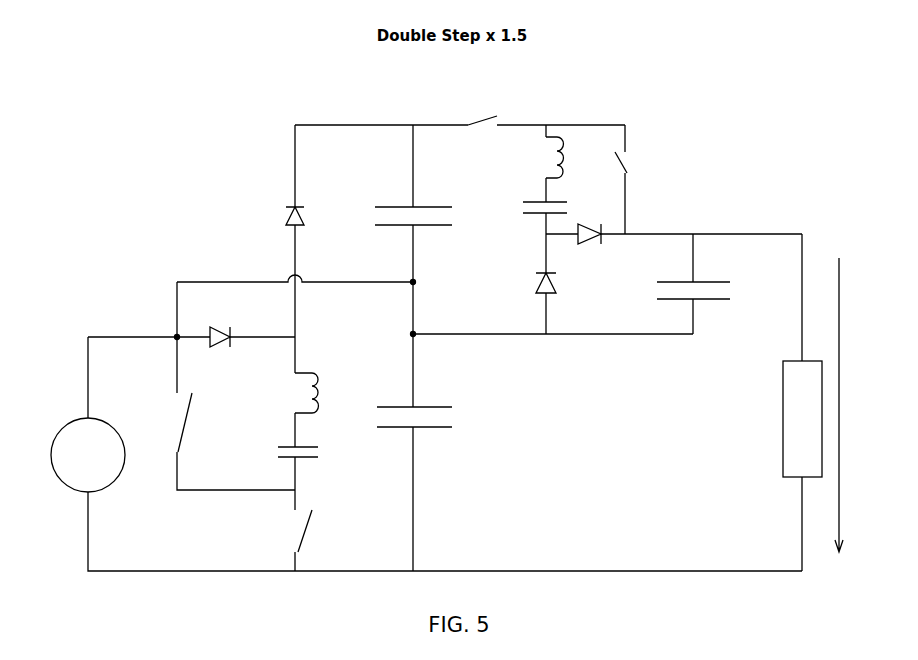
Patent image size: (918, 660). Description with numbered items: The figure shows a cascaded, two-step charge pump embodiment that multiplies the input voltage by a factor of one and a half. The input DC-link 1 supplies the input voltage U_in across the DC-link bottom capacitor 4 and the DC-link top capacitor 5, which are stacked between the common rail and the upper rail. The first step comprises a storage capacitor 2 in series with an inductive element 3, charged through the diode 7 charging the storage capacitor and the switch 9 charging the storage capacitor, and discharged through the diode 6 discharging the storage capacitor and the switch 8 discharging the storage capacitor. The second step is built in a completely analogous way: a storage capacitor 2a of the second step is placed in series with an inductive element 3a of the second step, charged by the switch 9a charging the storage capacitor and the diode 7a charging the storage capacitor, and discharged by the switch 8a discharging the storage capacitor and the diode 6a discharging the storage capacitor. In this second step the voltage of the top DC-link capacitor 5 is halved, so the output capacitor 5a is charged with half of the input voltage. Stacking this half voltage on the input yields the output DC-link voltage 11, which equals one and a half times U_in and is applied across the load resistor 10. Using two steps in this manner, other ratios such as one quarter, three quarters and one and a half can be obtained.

The input DC-link 1 is at (76, 455).
The storage capacitor 2 is at (291, 461).
The inductive element 3 is at (300, 393).
The DC-link bottom capacitor 4 is at (414, 427).
The DC-link top capacitor 5 is at (413, 223).
The diode discharging the storage capacitor 6 is at (286, 216).
The diode charging the storage capacitor 7 is at (220, 324).
The switch discharging the storage capacitor 8 is at (190, 422).
The switch charging the storage capacitor 9 is at (314, 540).
The load resistor 10 is at (785, 419).
The output DC-link voltage 11 is at (856, 404).
The storage capacitor of a second step charge pump circuit 2a is at (531, 209).
The inductive element of a second step charge pump circuit 3a is at (542, 157).
The output capacitor 5a is at (696, 298).
The diode discharging the storage capacitor of a second step circuit 6a is at (530, 286).
The diode charging the storage capacitor of a second step circuit 7a is at (592, 249).
The switch discharging the storage capacitor of a second step circuit 8a is at (636, 161).
The switch charging the storage capacitor of a second step circuit 9a is at (482, 107).